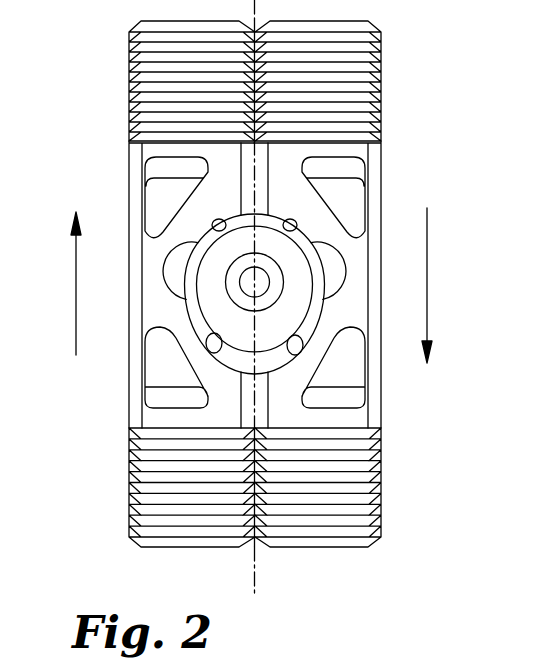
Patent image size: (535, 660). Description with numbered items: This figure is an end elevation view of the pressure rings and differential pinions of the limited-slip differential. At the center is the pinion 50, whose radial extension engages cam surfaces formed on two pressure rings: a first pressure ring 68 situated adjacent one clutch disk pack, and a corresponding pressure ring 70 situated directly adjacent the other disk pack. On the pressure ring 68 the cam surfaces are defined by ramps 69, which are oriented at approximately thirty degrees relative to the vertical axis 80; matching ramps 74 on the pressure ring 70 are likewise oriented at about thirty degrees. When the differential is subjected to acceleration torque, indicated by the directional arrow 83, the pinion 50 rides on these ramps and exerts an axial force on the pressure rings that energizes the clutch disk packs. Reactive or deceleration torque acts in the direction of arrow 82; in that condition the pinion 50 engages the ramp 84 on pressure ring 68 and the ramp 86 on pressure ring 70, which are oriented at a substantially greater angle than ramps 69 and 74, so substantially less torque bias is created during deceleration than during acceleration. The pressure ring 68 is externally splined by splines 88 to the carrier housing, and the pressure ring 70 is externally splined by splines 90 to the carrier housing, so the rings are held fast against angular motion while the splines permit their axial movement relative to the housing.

The pinion 50 is at (288, 262).
The first pressure ring 68 is at (383, 139).
The ramps 69 is at (303, 335).
The pressure ring 70 is at (148, 133).
The ramps 74 is at (223, 337).
The vertical axis 80 is at (317, 311).
The arrow 82 is at (427, 280).
The directional arrow 83 is at (76, 300).
The ramp 84 is at (283, 237).
The ramp 86 is at (227, 225).
The splines 88 is at (336, 33).
The splines 90 is at (160, 46).